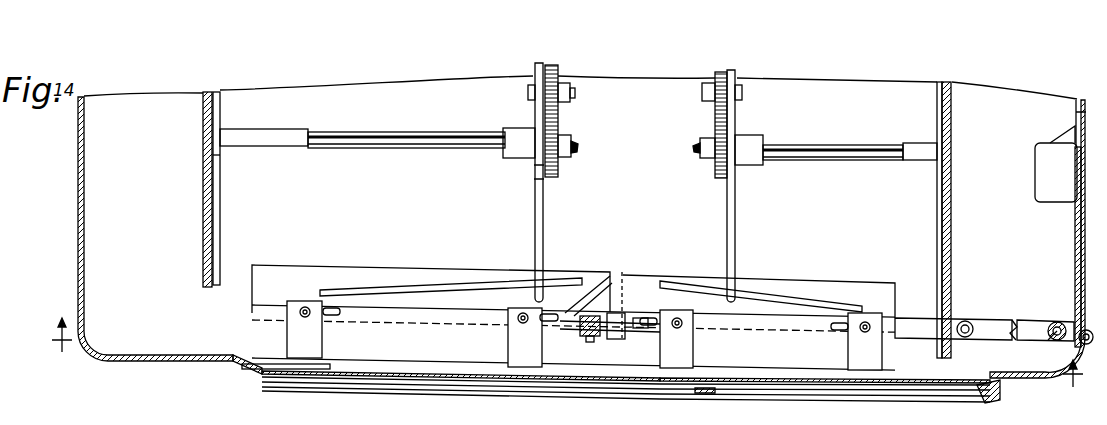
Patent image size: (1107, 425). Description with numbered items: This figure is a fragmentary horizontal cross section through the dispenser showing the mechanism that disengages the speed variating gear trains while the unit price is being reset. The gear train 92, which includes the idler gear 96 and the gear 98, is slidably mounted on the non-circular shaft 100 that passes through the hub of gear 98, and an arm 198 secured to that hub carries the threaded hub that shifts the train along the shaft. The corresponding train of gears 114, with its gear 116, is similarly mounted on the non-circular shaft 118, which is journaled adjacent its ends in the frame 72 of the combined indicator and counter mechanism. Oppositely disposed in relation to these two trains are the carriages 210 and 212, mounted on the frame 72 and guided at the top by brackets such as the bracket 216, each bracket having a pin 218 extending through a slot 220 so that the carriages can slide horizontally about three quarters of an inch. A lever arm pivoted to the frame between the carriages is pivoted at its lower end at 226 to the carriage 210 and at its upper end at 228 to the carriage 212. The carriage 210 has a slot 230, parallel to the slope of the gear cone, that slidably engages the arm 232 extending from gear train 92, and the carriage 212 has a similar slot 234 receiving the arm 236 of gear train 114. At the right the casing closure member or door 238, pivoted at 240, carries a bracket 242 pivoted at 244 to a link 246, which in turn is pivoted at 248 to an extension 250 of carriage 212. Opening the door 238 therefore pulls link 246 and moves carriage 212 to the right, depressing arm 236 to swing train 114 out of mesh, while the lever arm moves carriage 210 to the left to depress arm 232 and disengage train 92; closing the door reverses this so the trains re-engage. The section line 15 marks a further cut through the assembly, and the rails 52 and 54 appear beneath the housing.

The section line 15- 15 is at (566, 352).
The rail 52 is at (835, 399).
The rail 54 is at (432, 393).
The frame 72 is at (203, 236).
The gear train 92 is at (528, 96).
The idler gear 96 is at (560, 69).
The gear 98 is at (558, 167).
The non-circular shaft 100 is at (400, 132).
The train of gears 114 is at (737, 109).
The gear 116 is at (712, 172).
The non-circular shaft 118 is at (840, 143).
The arm 198 is at (533, 178).
The carriage 210 is at (428, 326).
The carriage 212 is at (822, 282).
The bracket 216 is at (287, 338).
The pin 218 is at (306, 307).
The slot 220 is at (335, 316).
The pivot 226 is at (645, 331).
The pivot 228 is at (588, 338).
The slot 230 is at (408, 282).
The arm 232 is at (543, 230).
The slot 234 is at (770, 290).
The arm 236 is at (735, 220).
The closure member 238 is at (1075, 243).
The pivot 240 is at (1087, 330).
The bracket 242 is at (1060, 323).
The pivot 244 is at (1050, 341).
The link 246 is at (1020, 320).
The pivot 248 is at (964, 338).
The extension 250 is at (905, 338).